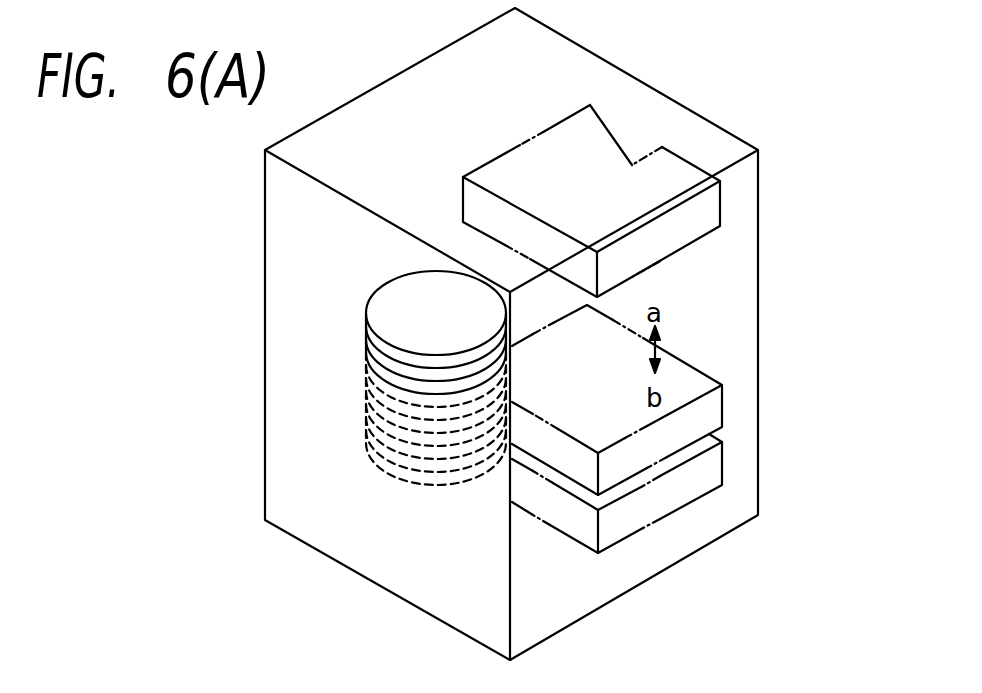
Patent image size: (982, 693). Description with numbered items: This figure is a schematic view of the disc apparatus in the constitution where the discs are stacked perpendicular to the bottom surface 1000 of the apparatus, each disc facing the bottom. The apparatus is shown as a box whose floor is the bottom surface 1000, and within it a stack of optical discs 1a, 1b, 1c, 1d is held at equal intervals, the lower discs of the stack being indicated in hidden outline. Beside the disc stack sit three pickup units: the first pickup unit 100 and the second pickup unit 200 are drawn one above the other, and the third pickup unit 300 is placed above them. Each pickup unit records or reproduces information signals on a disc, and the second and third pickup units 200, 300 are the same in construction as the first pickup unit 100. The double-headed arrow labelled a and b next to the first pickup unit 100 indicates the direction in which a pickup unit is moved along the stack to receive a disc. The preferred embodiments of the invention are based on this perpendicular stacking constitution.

The bottom surface 1000 is at (410, 604).
The third pickup unit 300 is at (661, 147).
The first pickup unit 100 is at (723, 400).
The second pickup unit 200 is at (723, 455).
The optical disc 1a is at (377, 293).
The optical disc 1b is at (368, 345).
The optical disc 1c is at (368, 363).
The optical disc 1d is at (368, 394).